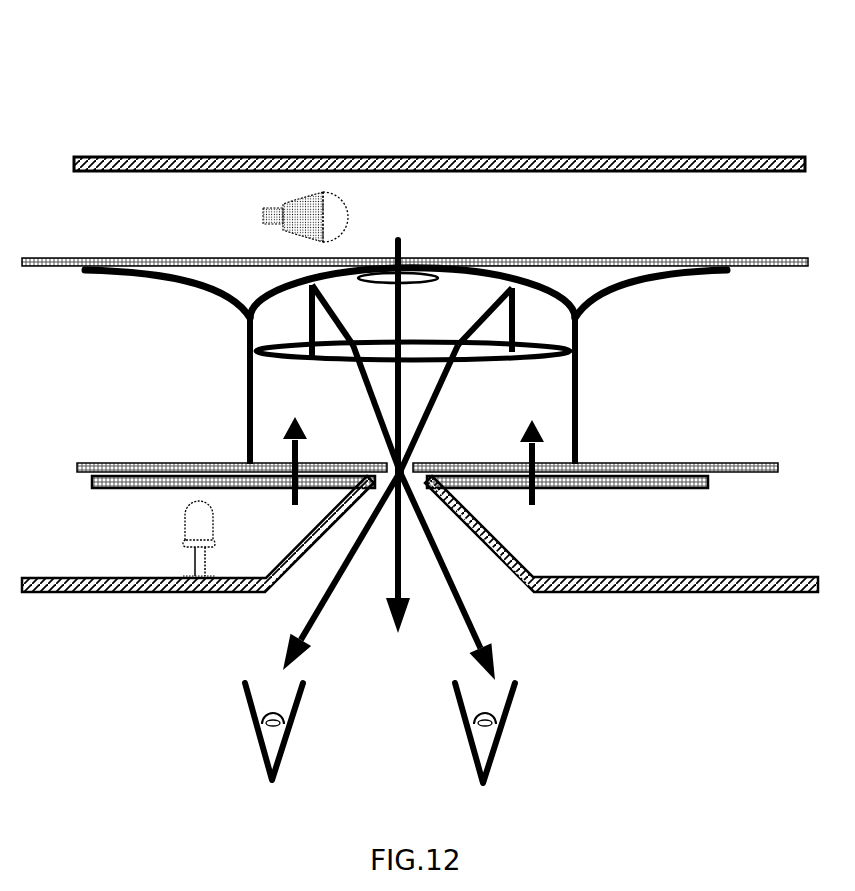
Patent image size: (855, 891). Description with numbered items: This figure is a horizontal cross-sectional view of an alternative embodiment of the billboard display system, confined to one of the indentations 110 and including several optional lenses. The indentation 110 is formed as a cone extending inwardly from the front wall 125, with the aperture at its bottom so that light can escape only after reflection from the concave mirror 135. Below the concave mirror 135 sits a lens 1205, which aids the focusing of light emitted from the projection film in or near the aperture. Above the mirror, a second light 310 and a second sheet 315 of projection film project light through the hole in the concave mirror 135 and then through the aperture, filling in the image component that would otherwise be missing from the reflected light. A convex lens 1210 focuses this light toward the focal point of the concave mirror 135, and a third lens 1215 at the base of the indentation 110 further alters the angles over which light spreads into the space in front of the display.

The indentation 110 is at (462, 552).
The front wall 125 is at (692, 593).
The concave mirror 135 is at (537, 290).
The second light 310 is at (338, 213).
The second sheet of projection film 315 is at (645, 259).
The lens 1205 is at (545, 355).
The convex lens 1210 is at (409, 278).
The third lens 1215 is at (390, 480).